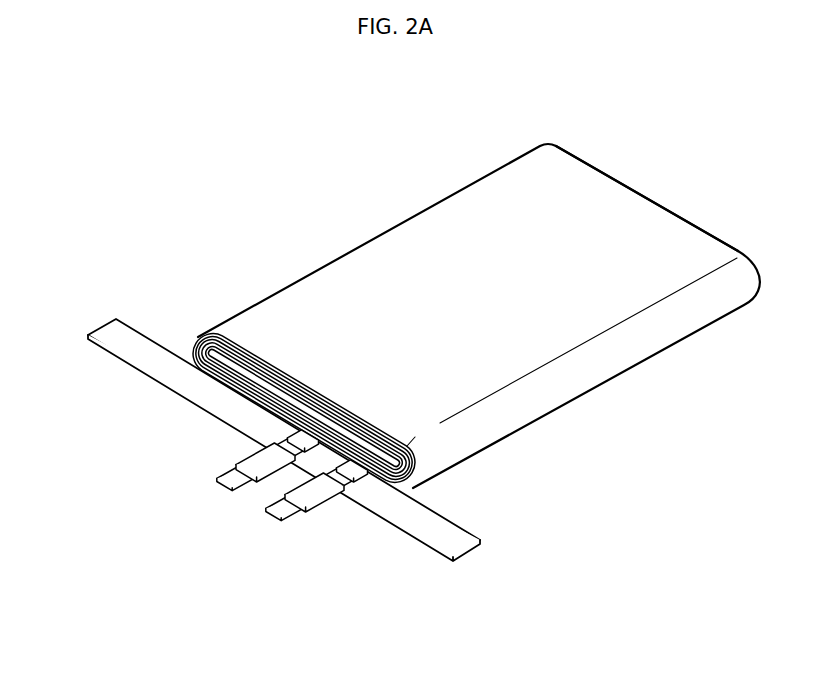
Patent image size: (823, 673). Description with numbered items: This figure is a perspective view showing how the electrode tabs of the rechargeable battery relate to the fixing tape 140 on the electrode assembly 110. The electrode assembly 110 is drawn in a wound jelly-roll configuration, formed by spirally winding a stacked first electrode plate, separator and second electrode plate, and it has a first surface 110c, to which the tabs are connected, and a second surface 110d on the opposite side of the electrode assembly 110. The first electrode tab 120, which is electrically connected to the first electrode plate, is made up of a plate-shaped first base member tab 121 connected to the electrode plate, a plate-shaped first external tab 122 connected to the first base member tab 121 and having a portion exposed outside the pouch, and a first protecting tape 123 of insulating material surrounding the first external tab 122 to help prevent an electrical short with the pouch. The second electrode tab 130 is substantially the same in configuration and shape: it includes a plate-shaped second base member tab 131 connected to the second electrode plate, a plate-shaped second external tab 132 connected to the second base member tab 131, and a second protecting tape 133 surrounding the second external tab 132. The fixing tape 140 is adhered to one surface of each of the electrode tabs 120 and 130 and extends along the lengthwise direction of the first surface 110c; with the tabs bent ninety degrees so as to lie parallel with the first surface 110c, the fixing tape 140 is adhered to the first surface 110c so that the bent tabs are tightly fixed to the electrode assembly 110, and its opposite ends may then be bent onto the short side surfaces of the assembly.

The electrode assembly 110 is at (348, 258).
The first surface 110c is at (191, 347).
The second surface 110d is at (587, 158).
The first electrode tab 120 is at (319, 551).
The first base member tab 121 is at (366, 522).
The first external tab 122 is at (282, 493).
The first protecting tape 123 is at (316, 493).
The second electrode tab 130 is at (170, 458).
The second base member tab 131 is at (298, 433).
The second external tab 132 is at (227, 470).
The second protecting tape 133 is at (265, 462).
The fixing tape 140 is at (458, 540).